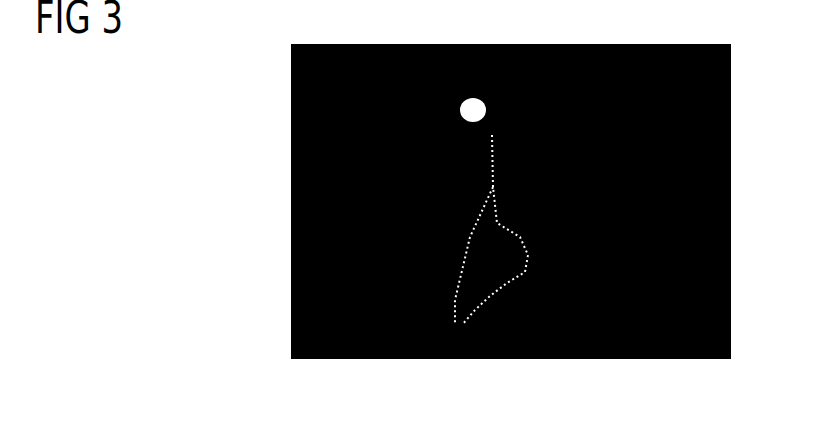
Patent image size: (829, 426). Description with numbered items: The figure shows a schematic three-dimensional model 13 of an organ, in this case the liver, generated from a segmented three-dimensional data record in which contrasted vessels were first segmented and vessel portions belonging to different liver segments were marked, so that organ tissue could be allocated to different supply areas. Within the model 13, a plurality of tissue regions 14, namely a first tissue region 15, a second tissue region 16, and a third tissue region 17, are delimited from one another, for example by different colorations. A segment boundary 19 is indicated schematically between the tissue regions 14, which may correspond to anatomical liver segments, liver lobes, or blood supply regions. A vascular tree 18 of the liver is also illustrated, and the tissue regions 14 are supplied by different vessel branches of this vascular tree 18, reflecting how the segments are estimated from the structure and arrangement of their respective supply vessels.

The 3D model 13 is at (327, 174).
The tissue regions 14 is at (498, 202).
The first tissue region 15 is at (397, 127).
The second tissue region 16 is at (495, 283).
The third tissue region 17 is at (608, 80).
The vascular tree 18 is at (445, 127).
The segment boundary 19 is at (448, 310).